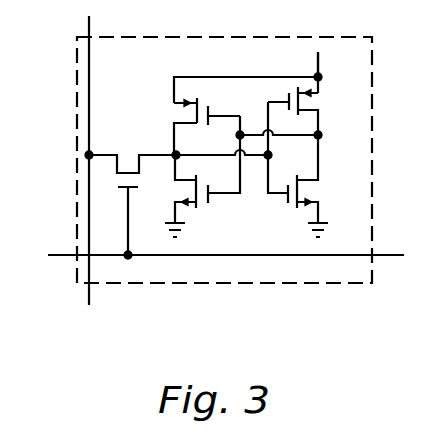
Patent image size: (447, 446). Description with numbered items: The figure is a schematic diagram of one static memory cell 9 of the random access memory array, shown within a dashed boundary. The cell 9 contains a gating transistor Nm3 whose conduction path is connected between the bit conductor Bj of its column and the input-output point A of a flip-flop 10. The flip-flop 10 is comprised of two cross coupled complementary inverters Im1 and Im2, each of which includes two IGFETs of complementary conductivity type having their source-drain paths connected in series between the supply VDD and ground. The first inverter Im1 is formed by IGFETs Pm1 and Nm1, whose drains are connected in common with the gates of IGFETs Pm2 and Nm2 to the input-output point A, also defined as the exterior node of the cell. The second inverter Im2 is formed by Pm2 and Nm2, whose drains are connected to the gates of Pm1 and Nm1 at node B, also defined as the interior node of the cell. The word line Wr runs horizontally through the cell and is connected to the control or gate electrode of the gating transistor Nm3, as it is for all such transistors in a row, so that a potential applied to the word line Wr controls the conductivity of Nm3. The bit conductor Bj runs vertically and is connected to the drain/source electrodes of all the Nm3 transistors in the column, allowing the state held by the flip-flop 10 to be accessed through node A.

The flip-flop 10 is at (265, 68).
The memory cell 9 is at (333, 283).
The supply potential VDD is at (341, 59).
The bit conductor Bj is at (89, 72).
The word line Wr is at (70, 253).
The gating transistor Nm3 is at (132, 193).
The input-output point A is at (178, 153).
The interior node B is at (321, 137).
The P-channel IGFET of first inverter Pm1 is at (186, 126).
The P-channel IGFET of second inverter Pm2 is at (316, 101).
The N-channel IGFET of first inverter Nm1 is at (190, 188).
The N-channel IGFET of second inverter Nm2 is at (319, 178).
The first inverter Im1 is at (222, 236).
The second inverter Im2 is at (300, 236).